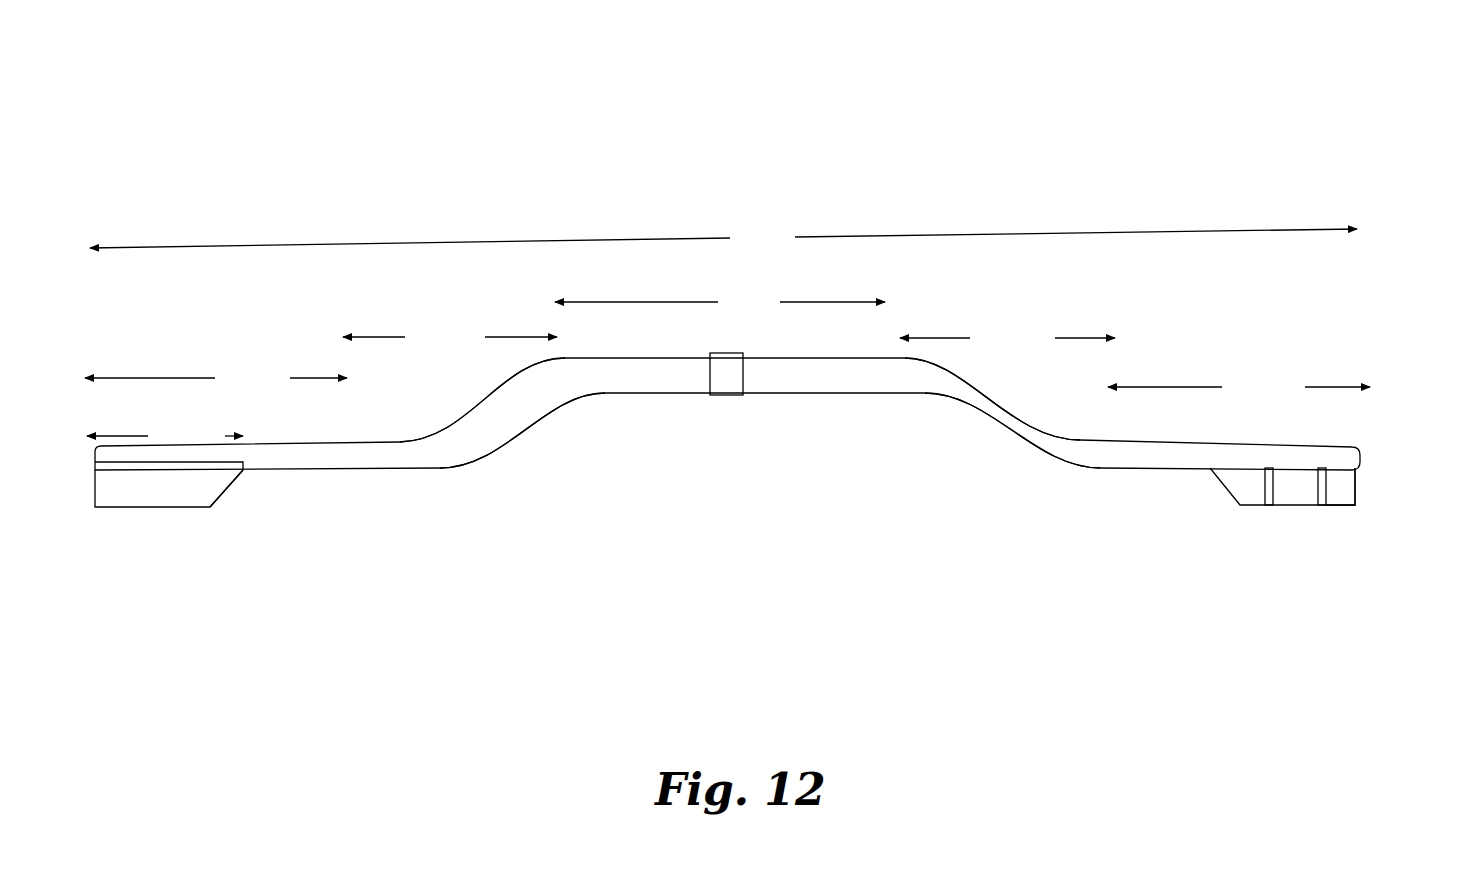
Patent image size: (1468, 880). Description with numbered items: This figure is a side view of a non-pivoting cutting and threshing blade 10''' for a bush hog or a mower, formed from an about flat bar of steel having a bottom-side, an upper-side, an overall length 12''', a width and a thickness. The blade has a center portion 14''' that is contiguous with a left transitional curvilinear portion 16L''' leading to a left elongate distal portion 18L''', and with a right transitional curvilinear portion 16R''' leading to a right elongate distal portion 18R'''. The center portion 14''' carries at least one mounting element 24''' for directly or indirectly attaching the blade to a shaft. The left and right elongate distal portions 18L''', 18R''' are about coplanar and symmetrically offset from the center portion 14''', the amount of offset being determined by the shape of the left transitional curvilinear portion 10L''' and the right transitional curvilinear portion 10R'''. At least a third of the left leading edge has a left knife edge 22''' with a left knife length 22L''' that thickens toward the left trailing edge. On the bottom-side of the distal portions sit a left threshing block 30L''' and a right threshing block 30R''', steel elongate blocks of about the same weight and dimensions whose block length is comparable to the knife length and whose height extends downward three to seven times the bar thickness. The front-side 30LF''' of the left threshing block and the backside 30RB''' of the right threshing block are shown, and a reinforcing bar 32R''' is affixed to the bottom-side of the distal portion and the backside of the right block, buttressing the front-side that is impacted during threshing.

The cutting and threshing blade 10''' is at (727, 265).
The left transitional curvilinear portion 10L''' is at (502, 473).
The right transitional curvilinear portion 10R''' is at (1002, 476).
The overall length 12''' is at (723, 239).
The center portion 14''' is at (720, 300).
The left transitional curvilinear portion 16L''' is at (450, 337).
The right transitional curvilinear portion 16R''' is at (1007, 338).
The left elongate distal portion 18L''' is at (216, 377).
The right elongate distal portion 18R''' is at (1239, 386).
The left knife length 22L''' is at (165, 435).
The left knife edge 22''' is at (203, 550).
The mounting element 24''' is at (813, 440).
The left threshing block 30L''' is at (169, 526).
The front-side of the left threshing block 30LF''' is at (212, 543).
The right threshing block 30R''' is at (1251, 527).
The backside of the right threshing block 30RB''' is at (1385, 527).
The reinforcing bar 32R''' is at (1316, 568).